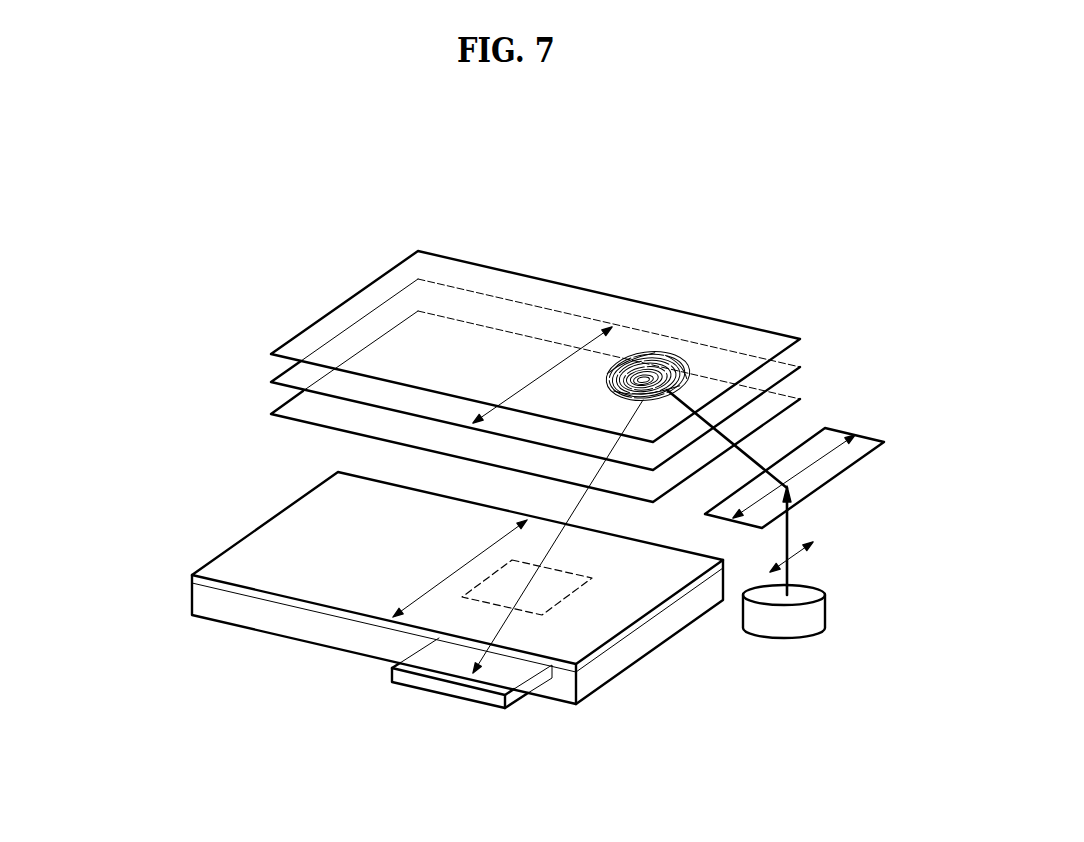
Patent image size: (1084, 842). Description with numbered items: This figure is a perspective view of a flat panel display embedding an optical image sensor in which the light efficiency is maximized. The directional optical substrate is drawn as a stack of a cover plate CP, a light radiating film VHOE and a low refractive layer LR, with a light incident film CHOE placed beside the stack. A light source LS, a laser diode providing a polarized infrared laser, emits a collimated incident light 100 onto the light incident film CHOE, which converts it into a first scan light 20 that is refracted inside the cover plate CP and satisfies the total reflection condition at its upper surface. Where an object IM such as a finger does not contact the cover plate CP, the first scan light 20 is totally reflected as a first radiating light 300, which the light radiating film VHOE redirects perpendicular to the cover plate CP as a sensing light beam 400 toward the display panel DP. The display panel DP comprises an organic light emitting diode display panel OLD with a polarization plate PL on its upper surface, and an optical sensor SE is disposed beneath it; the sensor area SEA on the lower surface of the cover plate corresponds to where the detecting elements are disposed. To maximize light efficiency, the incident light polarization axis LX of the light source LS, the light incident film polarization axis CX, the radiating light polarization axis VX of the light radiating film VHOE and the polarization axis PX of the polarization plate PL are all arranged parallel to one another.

The cover plate CP is at (802, 341).
The light radiating film VHOE is at (802, 369).
The low refractive layer LR is at (802, 400).
The radiating light polarization axis VX is at (557, 366).
The object IM is at (662, 352).
The first scan light 20 is at (752, 462).
The light incident film CHOE is at (848, 470).
The light incident film polarization axis CX is at (808, 473).
The incident light 100 is at (790, 527).
The incident light polarization axis LX is at (798, 557).
The light source LS is at (826, 610).
The first radiating light 300 is at (583, 536).
The sensing light beam 400 is at (577, 503).
The display panel DP is at (402, 588).
The polarization plate PL is at (192, 577).
The organic light emitting diode display panel OLD is at (198, 600).
The polarization axis of the polarization plate PX is at (415, 605).
The optical sensor SE is at (450, 690).
The sensor area SEA is at (568, 598).